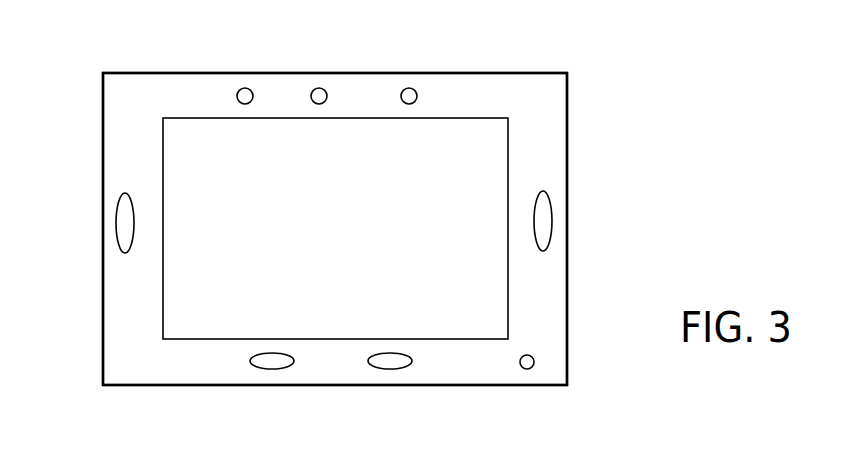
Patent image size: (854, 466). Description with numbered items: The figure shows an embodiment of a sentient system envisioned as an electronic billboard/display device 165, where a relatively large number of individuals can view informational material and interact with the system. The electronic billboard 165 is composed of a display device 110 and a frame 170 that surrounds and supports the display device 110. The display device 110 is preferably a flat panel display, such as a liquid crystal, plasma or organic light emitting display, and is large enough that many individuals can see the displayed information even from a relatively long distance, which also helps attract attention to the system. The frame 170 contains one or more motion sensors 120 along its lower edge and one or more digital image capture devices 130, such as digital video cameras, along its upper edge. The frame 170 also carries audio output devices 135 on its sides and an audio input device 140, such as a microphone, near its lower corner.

The electronic billboard/display device 165 is at (592, 111).
The frame 170 is at (132, 83).
The display device 110 is at (484, 285).
The digital image capture devices 130 is at (243, 88).
The audio output devices 135 is at (116, 215).
The motion sensors 120 is at (268, 369).
The audio input device 140 is at (534, 362).